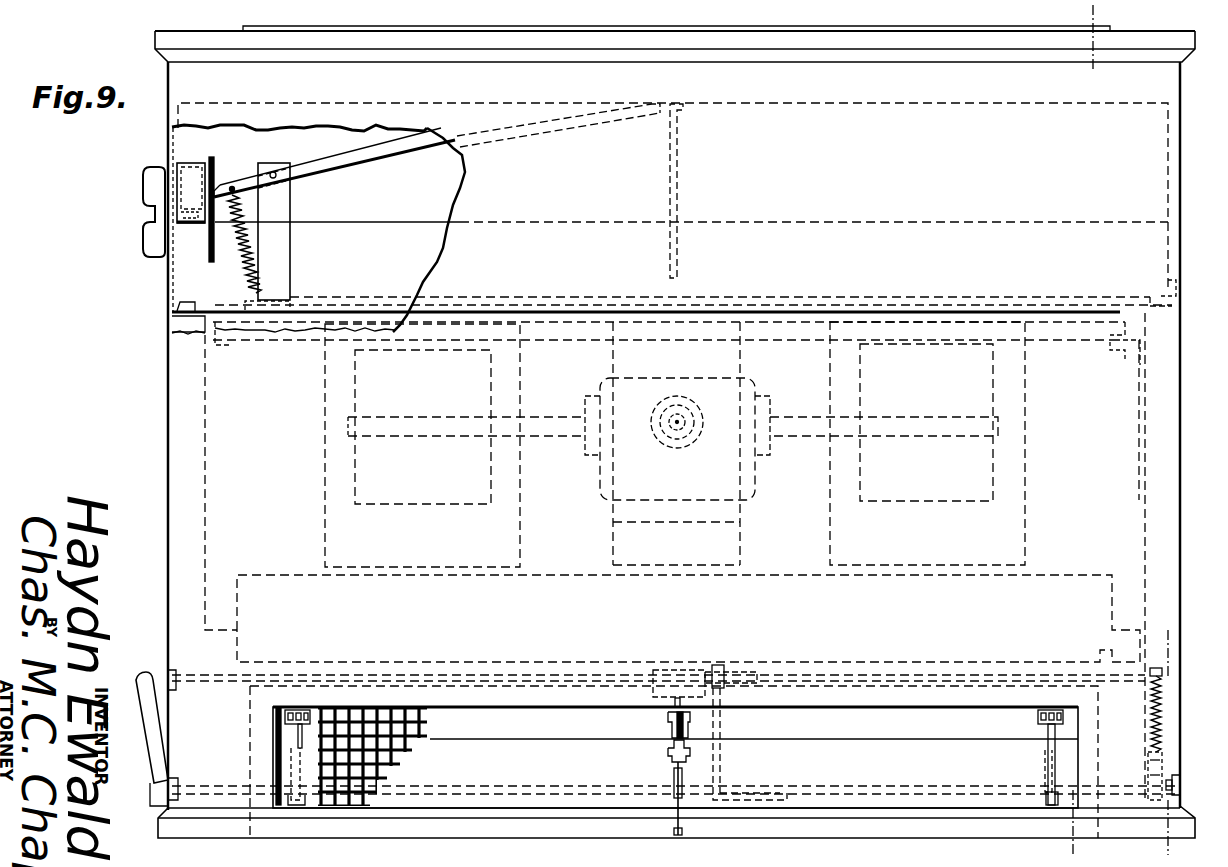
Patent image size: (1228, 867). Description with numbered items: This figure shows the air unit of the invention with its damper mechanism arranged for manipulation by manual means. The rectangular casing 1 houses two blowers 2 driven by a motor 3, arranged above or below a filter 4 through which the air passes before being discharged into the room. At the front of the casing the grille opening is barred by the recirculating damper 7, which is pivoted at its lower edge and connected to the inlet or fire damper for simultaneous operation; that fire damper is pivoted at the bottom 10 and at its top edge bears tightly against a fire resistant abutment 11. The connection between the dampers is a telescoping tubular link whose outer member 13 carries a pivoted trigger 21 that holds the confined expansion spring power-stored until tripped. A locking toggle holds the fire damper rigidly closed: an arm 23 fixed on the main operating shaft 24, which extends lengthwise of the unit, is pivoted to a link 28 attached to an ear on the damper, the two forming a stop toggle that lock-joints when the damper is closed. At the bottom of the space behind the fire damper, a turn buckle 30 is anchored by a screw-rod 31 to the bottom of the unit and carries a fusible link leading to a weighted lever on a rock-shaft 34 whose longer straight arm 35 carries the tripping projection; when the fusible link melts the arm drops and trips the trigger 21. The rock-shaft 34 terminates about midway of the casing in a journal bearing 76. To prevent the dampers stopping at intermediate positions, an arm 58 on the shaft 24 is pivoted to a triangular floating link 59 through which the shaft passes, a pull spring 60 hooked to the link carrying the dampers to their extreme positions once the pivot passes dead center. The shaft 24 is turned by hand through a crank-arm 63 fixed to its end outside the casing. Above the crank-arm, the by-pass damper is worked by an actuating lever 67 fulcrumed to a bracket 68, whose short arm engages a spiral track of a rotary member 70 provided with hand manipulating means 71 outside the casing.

The casing 1 is at (168, 401).
The blowers 2 is at (689, 444).
The motor 3 is at (673, 443).
The filter 4 is at (268, 582).
The recirculating damper 7 is at (567, 746).
The bottom pivot 10 is at (1082, 14).
The fire resistant abutment 11 is at (1157, 657).
The outer tubular member 13 is at (672, 729).
The trigger 21 is at (656, 718).
The arm 23 is at (290, 776).
The main operating shaft 24 is at (863, 793).
The link 28 is at (638, 756).
The turn buckle 30 is at (682, 768).
The screw-rod 31 is at (681, 826).
The rock-shaft 34 is at (478, 676).
The longer straight arm 35 is at (679, 670).
The arm 58 is at (1178, 783).
The triangular floating link 59 is at (1168, 762).
The pull spring 60 is at (1166, 716).
The crank-arm 63 is at (139, 676).
The actuating lever 67 is at (367, 160).
The bracket 68 is at (291, 246).
The rotary member 70 is at (211, 260).
The hand manipulating means 71 is at (147, 233).
The journal bearing 76 is at (723, 723).